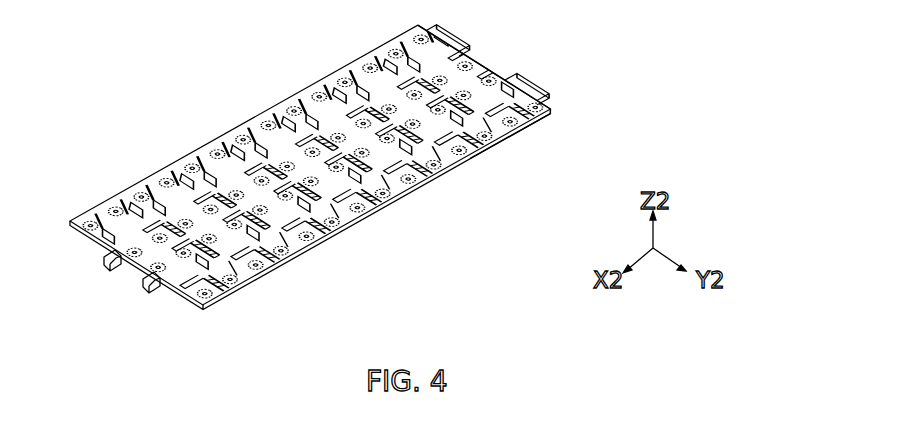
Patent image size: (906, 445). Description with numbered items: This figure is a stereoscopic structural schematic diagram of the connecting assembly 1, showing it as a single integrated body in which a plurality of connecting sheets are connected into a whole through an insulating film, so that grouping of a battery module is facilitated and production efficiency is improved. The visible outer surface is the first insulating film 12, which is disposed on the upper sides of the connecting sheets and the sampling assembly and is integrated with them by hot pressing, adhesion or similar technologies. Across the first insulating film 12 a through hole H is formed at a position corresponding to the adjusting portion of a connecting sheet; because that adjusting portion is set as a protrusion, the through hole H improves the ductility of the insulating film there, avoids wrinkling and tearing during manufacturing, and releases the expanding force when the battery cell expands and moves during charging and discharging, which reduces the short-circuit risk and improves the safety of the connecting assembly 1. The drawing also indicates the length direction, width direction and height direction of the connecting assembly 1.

The connecting assembly 1 is at (204, 96).
The first insulating film 12 is at (502, 77).
The through hole H is at (522, 123).